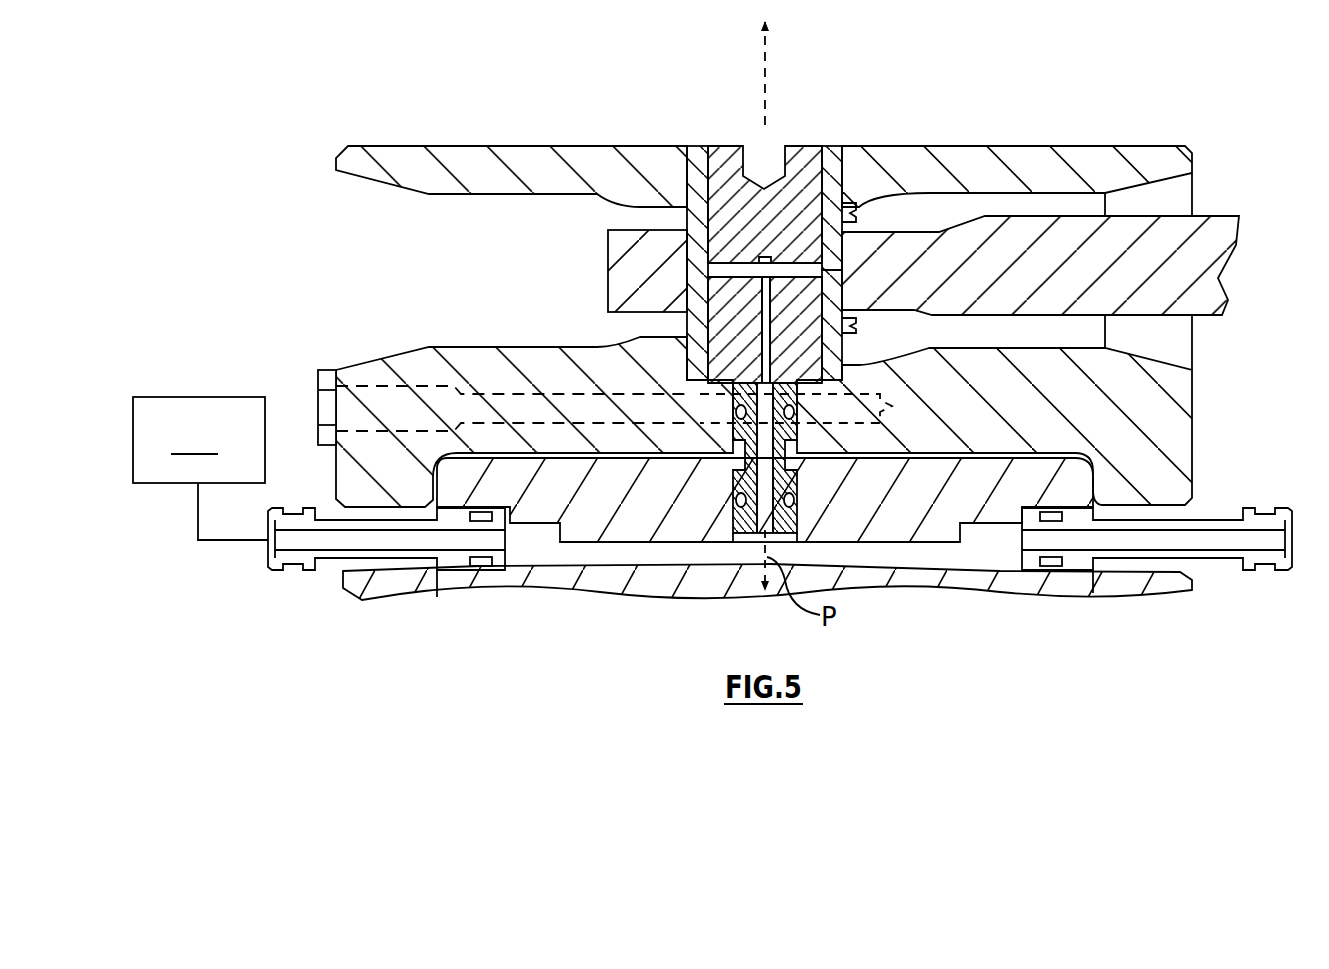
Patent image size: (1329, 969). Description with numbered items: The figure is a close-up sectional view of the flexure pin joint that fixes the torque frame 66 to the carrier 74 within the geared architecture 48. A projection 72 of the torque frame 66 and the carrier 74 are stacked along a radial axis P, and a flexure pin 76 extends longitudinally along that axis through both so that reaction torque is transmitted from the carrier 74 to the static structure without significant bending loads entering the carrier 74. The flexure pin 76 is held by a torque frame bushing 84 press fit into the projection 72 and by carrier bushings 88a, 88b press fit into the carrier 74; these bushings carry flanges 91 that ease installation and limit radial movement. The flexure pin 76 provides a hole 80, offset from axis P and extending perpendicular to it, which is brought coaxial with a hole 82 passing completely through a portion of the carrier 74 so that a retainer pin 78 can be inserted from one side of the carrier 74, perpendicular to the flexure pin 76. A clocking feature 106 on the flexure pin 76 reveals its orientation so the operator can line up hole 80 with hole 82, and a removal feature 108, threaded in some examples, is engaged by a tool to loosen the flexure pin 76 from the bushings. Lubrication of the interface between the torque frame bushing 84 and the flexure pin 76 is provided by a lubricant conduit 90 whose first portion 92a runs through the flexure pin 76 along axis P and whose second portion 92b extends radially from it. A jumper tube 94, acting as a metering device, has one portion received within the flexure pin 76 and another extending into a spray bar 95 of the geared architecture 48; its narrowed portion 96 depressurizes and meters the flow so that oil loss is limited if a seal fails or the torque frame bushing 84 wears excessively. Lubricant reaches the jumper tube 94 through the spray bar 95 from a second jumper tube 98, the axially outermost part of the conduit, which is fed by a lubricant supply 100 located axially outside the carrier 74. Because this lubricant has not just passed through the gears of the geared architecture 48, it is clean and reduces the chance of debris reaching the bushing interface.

The geared architecture 48 is at (379, 99).
The torque frame 66 is at (1073, 235).
The projection 72 is at (968, 245).
The carrier 74 is at (1163, 360).
The flexure pin 76 is at (808, 185).
The retainer pin 78 is at (318, 382).
The hole 80 is at (700, 410).
The hole 82 is at (892, 403).
The torque frame bushing 84 is at (837, 257).
The carrier bushing 88a is at (837, 180).
The carrier bushing 88b is at (833, 365).
The lubricant conduit 90 is at (677, 212).
The flange 91 is at (673, 228).
The first portion 92a is at (769, 320).
The second portion 92b is at (818, 275).
The jumper tube 94 is at (788, 517).
The spray bar 95 is at (1065, 583).
The narrowed portion 96 is at (774, 457).
The jumper tube 98 is at (275, 563).
The lubricant supply 100 is at (200, 468).
The clocking feature 106 is at (730, 146).
The removal feature 108 is at (770, 146).